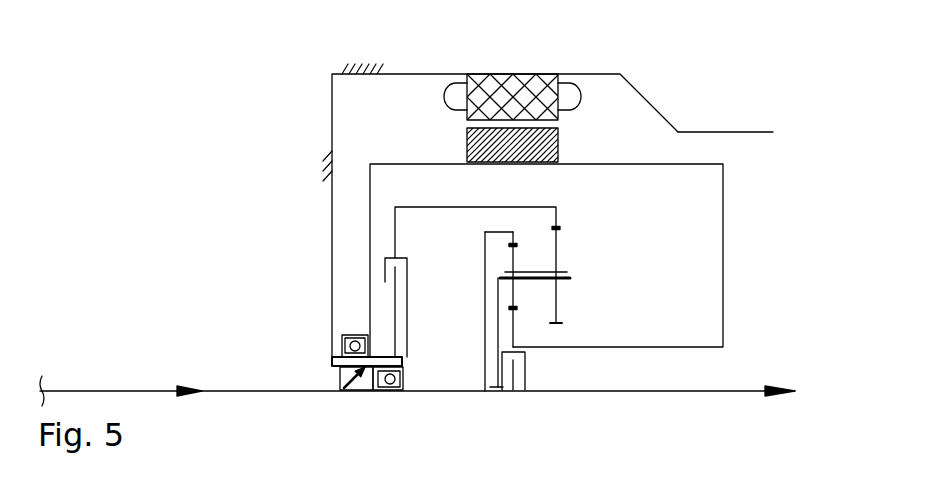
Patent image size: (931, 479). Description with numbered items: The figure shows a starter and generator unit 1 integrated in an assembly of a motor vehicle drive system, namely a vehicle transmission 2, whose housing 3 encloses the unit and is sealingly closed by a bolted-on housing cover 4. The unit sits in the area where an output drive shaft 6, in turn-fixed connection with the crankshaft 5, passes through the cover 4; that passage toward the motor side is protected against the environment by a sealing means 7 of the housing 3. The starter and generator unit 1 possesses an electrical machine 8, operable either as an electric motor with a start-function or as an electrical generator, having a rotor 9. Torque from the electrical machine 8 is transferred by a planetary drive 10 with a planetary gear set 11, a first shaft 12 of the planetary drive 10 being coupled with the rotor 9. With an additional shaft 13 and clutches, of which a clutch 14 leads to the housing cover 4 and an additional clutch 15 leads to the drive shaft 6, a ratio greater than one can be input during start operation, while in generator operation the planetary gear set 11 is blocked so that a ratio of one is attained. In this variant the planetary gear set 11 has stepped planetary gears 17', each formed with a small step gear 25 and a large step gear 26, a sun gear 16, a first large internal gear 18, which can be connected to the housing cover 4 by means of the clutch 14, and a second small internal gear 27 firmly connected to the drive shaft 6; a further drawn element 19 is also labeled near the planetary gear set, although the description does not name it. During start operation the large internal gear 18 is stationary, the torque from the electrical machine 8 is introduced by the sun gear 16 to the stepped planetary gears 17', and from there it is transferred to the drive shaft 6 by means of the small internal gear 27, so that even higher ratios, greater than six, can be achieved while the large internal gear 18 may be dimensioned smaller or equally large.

The starter and generator unit 1 is at (570, 160).
The vehicle transmission 2 is at (754, 260).
The housing 3 is at (710, 132).
The housing cover 4 is at (330, 120).
The crankshaft 5 is at (90, 391).
The drive shaft 6 is at (435, 392).
The sealing means 7 is at (358, 392).
The electrical machine 8 is at (543, 90).
The rotor 9 is at (460, 138).
The planetary drive 10 is at (390, 231).
The planetary gear set 11 is at (563, 207).
The first shaft 12 is at (725, 172).
The additional shaft 13 is at (468, 206).
The clutch 14 is at (408, 266).
The additional clutch 15 is at (526, 365).
The sun gear 16 is at (513, 327).
The stepped planetary gear 17' is at (588, 244).
The first large internal gear 18 is at (550, 228).
The spring plate 19 is at (570, 278).
The small step gear 25 is at (508, 244).
The large step gear 26 is at (560, 229).
The second small internal gear 27 is at (484, 323).